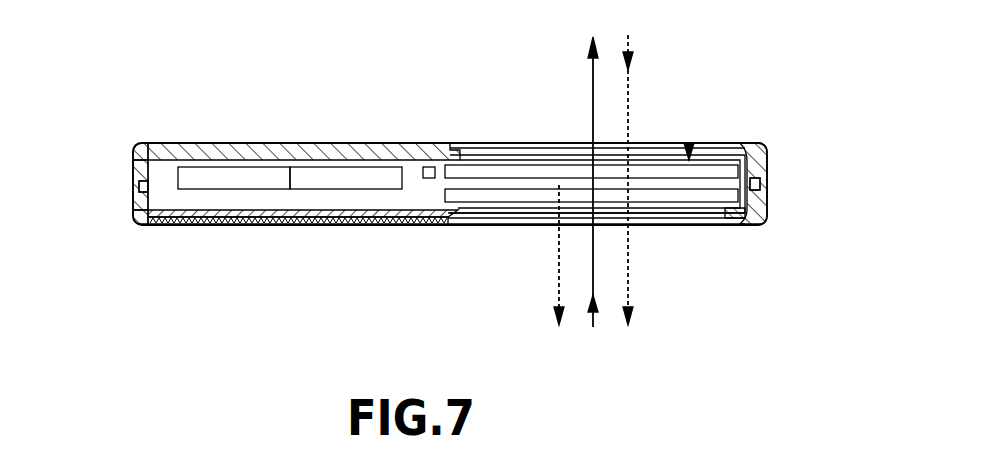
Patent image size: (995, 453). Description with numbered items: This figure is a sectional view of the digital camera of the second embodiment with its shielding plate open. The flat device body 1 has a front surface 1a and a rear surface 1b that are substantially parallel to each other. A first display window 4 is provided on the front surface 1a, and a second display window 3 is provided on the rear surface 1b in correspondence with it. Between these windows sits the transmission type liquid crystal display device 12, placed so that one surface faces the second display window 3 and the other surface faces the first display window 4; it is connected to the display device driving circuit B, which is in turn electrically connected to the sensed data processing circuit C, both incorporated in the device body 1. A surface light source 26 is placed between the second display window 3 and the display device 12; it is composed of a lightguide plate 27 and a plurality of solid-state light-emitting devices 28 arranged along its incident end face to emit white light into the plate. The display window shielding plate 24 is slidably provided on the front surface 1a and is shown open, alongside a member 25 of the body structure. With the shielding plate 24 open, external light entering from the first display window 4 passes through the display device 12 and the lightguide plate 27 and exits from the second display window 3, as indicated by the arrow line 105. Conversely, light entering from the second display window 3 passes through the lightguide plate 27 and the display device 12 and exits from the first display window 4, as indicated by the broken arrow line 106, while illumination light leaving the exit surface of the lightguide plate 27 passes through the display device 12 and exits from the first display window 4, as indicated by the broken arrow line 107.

The device body 1 is at (133, 191).
The front surface 1a is at (150, 225).
The rear surface 1b is at (203, 143).
The display device driving circuit B is at (240, 167).
The sensed data processing circuit C is at (318, 167).
The solid-state light-emitting devices 28 is at (428, 166).
The lightguide plate 27 is at (482, 170).
The second display window 3 is at (505, 147).
The surface light source 26 is at (690, 143).
The display window shielding plate 24 is at (297, 225).
The support plate 25 is at (490, 222).
The transmission type liquid crystal display device 12 is at (677, 192).
The first display window 4 is at (718, 225).
The arrow line 105 is at (593, 103).
The broken arrow line 106 is at (628, 282).
The broken arrow line 107 is at (559, 282).